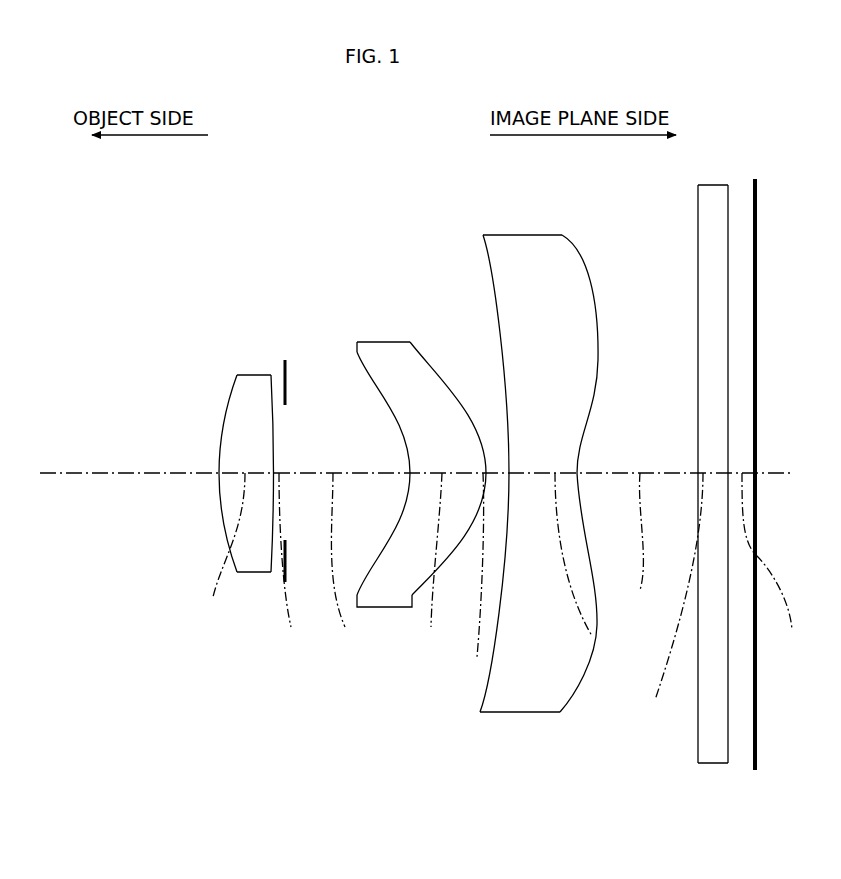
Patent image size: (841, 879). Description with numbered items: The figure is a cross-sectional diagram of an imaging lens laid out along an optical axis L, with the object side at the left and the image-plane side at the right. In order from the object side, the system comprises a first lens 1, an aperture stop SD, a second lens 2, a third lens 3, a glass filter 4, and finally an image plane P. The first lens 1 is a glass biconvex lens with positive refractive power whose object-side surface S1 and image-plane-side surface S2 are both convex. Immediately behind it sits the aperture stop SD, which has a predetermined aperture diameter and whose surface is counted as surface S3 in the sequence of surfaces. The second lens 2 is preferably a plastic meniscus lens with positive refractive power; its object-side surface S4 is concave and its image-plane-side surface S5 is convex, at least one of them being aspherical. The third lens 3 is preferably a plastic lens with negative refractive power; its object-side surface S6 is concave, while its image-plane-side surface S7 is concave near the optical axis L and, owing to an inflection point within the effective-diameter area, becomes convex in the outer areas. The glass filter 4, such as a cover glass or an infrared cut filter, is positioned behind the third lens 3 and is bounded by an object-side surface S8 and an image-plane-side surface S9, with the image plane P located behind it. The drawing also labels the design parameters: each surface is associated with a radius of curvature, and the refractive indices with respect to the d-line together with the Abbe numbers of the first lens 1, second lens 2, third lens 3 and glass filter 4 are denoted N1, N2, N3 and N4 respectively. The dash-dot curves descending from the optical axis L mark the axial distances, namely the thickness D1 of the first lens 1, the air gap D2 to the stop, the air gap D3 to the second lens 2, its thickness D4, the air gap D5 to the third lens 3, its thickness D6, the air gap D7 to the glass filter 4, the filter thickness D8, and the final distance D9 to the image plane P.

The first lens 1 is at (249, 370).
The second lens 2 is at (391, 337).
The third lens 3 is at (528, 232).
The glass filter 4 is at (708, 182).
The aperture stop SD is at (283, 357).
The image plane P is at (760, 222).
The optical axis L is at (72, 470).
The object-side surface of first lens S1 is at (220, 450).
The image-plane-side surface of first lens S2 is at (273, 428).
The surface of aperture stop S3 is at (289, 400).
The object-side surface of second lens S4 is at (407, 440).
The image-plane-side surface of second lens S5 is at (424, 358).
The object-side surface of third lens S6 is at (497, 410).
The image-plane-side surface of third lens S7 is at (628, 388).
The object-side surface of glass filter S8 is at (698, 372).
The image-plane-side surface of glass filter S9 is at (727, 278).
The axial thickness of first lens D1 is at (222, 550).
The air distance from first lens to aperture stop D2 is at (287, 563).
The air distance from aperture stop to second lens D3 is at (342, 563).
The axial thickness of second lens D4 is at (432, 563).
The air distance from second lens to third lens D5 is at (472, 580).
The axial thickness of third lens D6 is at (592, 636).
The air distance from third lens to glass filter D7 is at (639, 545).
The axial thickness of glass filter D8 is at (672, 600).
The air distance from glass filter to image plane D9 is at (773, 566).
The refractive index of first lens N1 is at (254, 574).
The refractive index of second lens N2 is at (387, 608).
The refractive index of third lens N3 is at (523, 713).
The refractive index of glass filter N4 is at (712, 765).